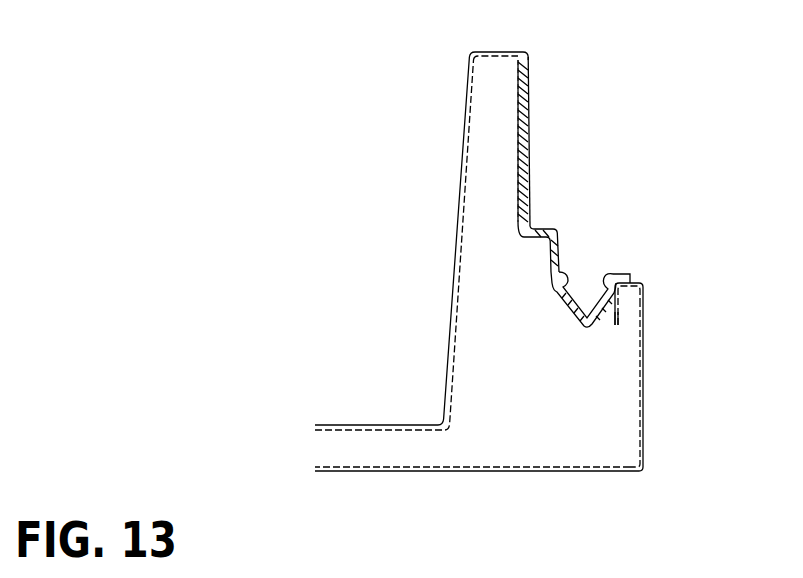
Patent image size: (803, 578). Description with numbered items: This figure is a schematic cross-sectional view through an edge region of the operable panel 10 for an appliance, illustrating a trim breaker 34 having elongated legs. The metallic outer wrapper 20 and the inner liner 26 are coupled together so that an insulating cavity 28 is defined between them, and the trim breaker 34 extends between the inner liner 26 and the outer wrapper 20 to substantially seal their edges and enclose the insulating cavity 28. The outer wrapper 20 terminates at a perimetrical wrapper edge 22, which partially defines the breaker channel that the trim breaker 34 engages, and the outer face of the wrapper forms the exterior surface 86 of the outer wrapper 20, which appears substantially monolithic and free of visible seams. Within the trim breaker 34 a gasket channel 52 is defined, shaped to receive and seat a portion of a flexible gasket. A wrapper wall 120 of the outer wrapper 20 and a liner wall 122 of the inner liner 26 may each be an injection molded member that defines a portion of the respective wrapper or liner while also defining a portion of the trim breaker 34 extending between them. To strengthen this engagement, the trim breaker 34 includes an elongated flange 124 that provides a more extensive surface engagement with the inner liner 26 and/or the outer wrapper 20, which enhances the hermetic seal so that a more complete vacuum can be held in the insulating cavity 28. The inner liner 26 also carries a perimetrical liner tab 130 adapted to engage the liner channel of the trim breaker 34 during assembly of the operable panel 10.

The operable panel 10 is at (577, 80).
The metallic outer wrapper 20 is at (643, 363).
The perimetrical wrapper edge 22 is at (615, 325).
The inner liner 26 is at (455, 252).
The insulating cavity 28 is at (479, 330).
The trim breaker 34 is at (548, 233).
The gasket channel 52 is at (585, 297).
The exterior surface 86 is at (643, 413).
The wrapper wall 120 is at (643, 303).
The liner wall 122 is at (491, 53).
The elongated flange 124 is at (517, 163).
The perimetrical liner tab 130 is at (530, 137).